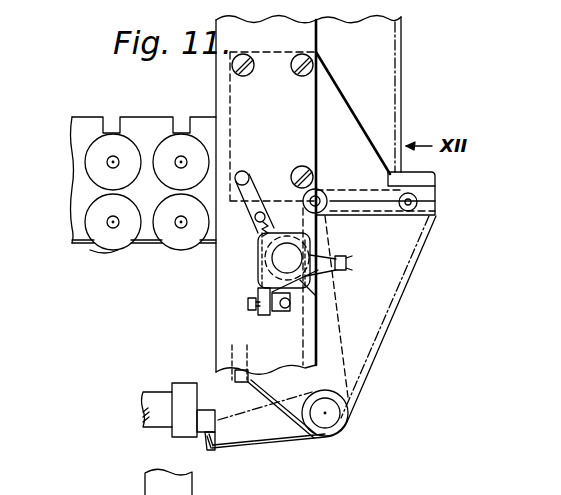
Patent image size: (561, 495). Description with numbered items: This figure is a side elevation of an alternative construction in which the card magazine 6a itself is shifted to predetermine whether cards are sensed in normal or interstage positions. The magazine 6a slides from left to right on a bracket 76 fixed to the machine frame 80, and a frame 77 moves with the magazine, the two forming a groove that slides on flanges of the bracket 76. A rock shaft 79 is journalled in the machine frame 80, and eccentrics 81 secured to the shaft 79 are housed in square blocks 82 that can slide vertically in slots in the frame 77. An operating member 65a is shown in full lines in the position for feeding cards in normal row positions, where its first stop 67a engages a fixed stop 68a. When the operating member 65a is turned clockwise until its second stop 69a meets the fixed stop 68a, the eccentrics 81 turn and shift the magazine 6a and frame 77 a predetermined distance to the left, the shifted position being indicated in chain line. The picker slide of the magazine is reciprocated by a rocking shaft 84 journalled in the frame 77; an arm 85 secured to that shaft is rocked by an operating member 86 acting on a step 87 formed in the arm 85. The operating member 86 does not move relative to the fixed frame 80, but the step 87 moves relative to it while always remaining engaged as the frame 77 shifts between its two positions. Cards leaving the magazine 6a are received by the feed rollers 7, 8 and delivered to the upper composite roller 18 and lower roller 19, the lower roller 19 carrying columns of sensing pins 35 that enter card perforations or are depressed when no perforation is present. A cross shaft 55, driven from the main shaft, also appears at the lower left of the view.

The upper composite roller 18 is at (85, 148).
The feeding roller 7 is at (152, 172).
The lower roller 19 is at (85, 205).
The feeding roller 8 is at (165, 232).
The sensing pin 35 is at (106, 254).
The card magazine 6a is at (368, 108).
The bracket 76 is at (345, 145).
The operating member 65a is at (253, 186).
The rock shaft 79 is at (278, 262).
The square block 82 is at (258, 285).
The machine frame 80 is at (248, 305).
The first stop 67a is at (259, 304).
The fixed stop 68a is at (290, 306).
The second stop 69a is at (347, 260).
The frame 77 is at (384, 290).
The eccentric 81 is at (330, 286).
The rocking shaft 84 is at (324, 415).
The arm 85 is at (272, 447).
The operating member 86 is at (200, 418).
The step 87 is at (210, 451).
The cross shaft 55 is at (157, 404).